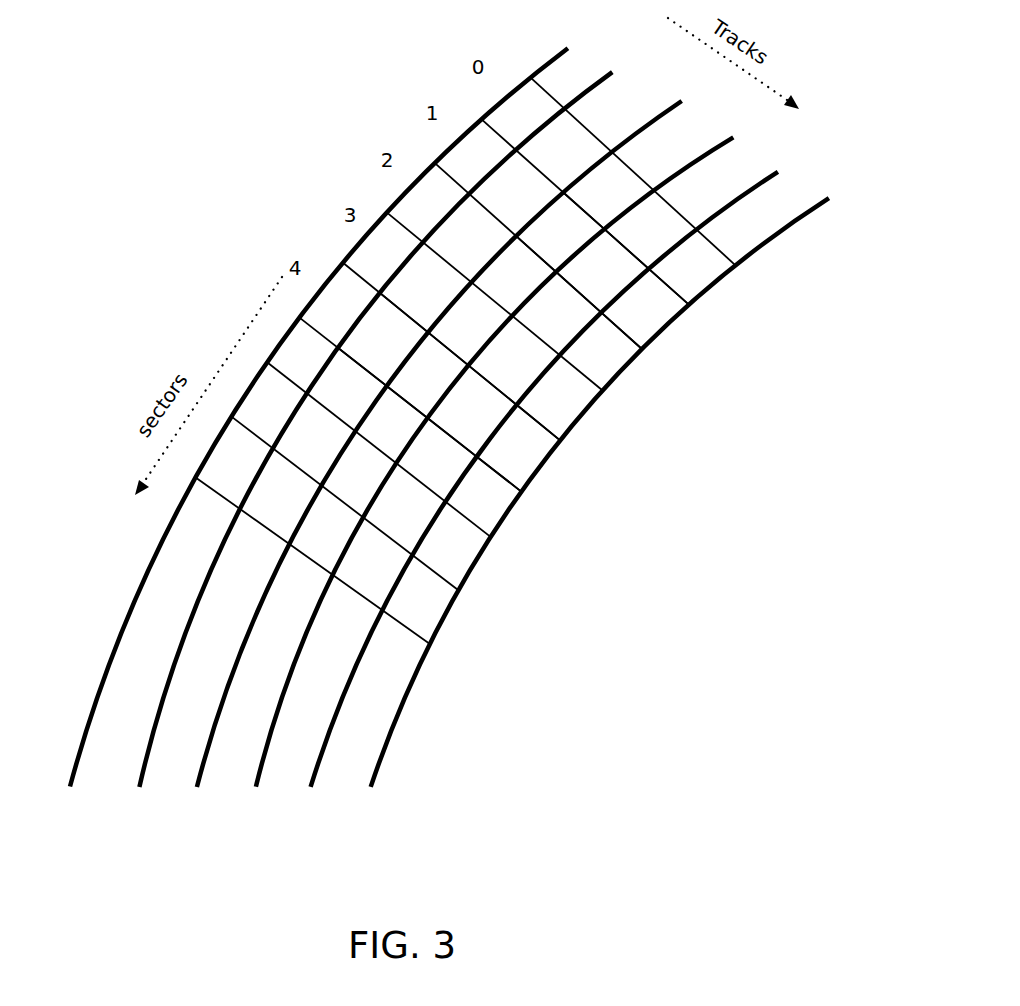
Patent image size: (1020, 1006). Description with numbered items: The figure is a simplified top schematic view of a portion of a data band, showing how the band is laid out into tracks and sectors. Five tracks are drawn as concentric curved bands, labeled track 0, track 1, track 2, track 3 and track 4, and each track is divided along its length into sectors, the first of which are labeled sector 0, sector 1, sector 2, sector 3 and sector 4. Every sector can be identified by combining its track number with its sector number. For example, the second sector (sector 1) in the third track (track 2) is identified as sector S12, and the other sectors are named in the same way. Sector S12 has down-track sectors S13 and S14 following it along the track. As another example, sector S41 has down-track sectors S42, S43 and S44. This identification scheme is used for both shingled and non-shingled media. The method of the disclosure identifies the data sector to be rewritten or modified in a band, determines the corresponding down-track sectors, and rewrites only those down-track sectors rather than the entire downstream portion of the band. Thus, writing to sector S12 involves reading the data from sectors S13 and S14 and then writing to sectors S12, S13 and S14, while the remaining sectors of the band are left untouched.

The track / sector 0 is at (342, 406).
The track / sector 1 is at (404, 423).
The track / sector 2 is at (461, 441).
The track / sector 3 is at (517, 459).
The track / sector 4 is at (566, 476).
The sector S12 is at (560, 233).
The down-track sector S13 is at (602, 270).
The down-track sector S14 is at (645, 309).
The sector S41 is at (383, 339).
The down-track sector S42 is at (428, 375).
The down-track sector S43 is at (472, 410).
The down-track sector S44 is at (518, 448).